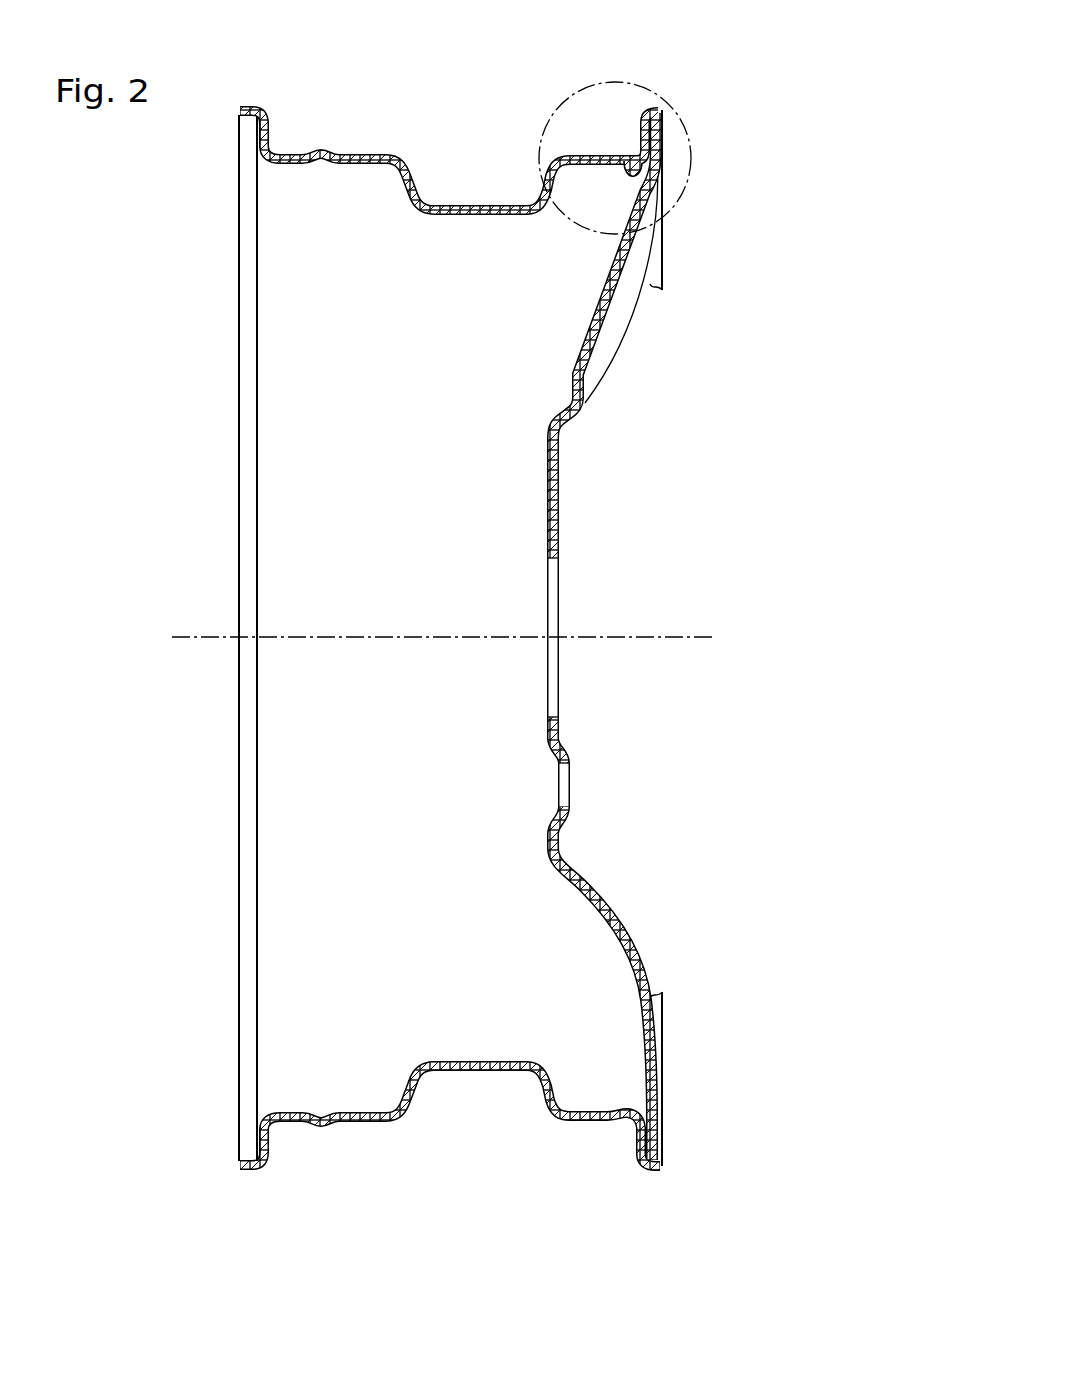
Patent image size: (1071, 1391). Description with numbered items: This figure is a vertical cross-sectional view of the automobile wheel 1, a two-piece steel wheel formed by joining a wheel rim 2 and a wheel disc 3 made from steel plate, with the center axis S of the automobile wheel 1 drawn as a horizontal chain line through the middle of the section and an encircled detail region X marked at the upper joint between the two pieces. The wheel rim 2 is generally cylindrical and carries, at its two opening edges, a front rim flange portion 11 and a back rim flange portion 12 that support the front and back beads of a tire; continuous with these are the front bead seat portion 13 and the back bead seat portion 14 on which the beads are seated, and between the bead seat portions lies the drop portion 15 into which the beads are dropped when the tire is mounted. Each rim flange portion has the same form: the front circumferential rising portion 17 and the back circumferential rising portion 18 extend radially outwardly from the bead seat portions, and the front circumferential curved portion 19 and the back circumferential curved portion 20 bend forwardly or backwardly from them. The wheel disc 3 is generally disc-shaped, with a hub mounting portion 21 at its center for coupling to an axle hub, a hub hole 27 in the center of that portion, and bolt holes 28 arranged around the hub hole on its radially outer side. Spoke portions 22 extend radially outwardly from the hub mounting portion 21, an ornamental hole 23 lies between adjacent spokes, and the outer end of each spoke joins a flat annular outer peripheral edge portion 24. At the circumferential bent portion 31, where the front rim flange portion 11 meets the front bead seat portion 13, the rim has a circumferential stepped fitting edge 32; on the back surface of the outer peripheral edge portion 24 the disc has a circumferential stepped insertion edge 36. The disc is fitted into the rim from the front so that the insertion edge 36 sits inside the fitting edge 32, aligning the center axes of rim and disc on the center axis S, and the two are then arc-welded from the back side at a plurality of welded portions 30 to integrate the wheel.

The automobile wheel 1 is at (813, 365).
The wheel rim 2 is at (370, 160).
The wheel disc 3 is at (558, 505).
The front rim flange portion 11 is at (650, 108).
The back rim flange portion 12 is at (238, 107).
The front bead seat portion 13 is at (600, 1120).
The back bead seat portion 14 is at (294, 155).
The drop portion 15 is at (480, 205).
The front circumferential rising portion 17 is at (662, 1143).
The back circumferential rising portion 18 is at (266, 122).
The front circumferential curved portion 19 is at (655, 1170).
The back circumferential curved portion 20 is at (238, 112).
The hub mounting portion 21 is at (558, 470).
The spoke portion 22 is at (623, 925).
The ornamental hole 23 is at (598, 318).
The outer peripheral edge portion 24 is at (654, 140).
The hub hole 27 is at (556, 684).
The bolt hole 28 is at (568, 784).
The welded portion 30 is at (636, 163).
The circumferential bent portion 31 is at (630, 1123).
The circumferential stepped fitting edge 32 is at (636, 156).
The circumferential stepped insertion edge 36 is at (652, 163).
The enlarged region X is at (690, 125).
The center axis S is at (210, 637).